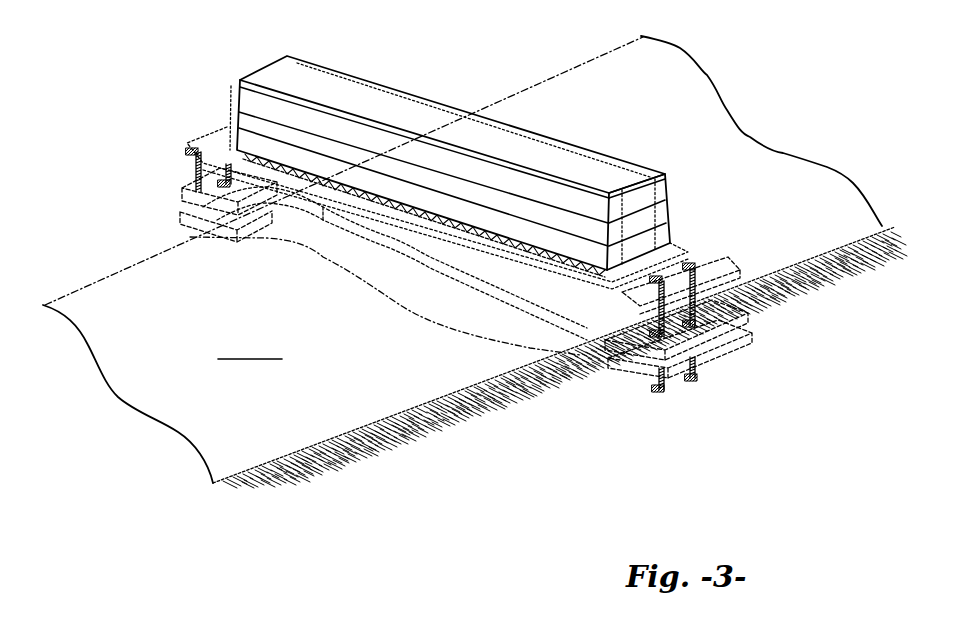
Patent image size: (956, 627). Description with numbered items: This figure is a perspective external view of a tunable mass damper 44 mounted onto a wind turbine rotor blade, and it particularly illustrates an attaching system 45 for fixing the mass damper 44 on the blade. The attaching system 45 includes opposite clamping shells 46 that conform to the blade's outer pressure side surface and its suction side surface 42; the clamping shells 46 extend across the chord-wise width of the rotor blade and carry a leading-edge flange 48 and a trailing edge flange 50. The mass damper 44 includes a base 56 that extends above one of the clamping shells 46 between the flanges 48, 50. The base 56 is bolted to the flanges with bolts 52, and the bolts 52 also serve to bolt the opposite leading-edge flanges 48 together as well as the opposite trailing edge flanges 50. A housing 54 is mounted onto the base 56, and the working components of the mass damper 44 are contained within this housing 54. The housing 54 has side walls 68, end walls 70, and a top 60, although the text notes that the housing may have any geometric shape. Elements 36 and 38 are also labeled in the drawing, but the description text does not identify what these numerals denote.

The upper plate 36 is at (120, 262).
The plate edge 38 is at (383, 437).
The suction side surface 42 is at (250, 346).
The mass damper 44 is at (497, 78).
The attaching system 45 is at (484, 325).
The clamping shells 46 is at (212, 228).
The leading-edge flange 48 is at (182, 198).
The trailing edge flange 50 is at (720, 342).
The bolts 52 is at (197, 158).
The housing 54 is at (327, 80).
The base 56 is at (212, 128).
The top 60 is at (583, 162).
The side walls 68 is at (372, 182).
The end walls 70 is at (665, 207).